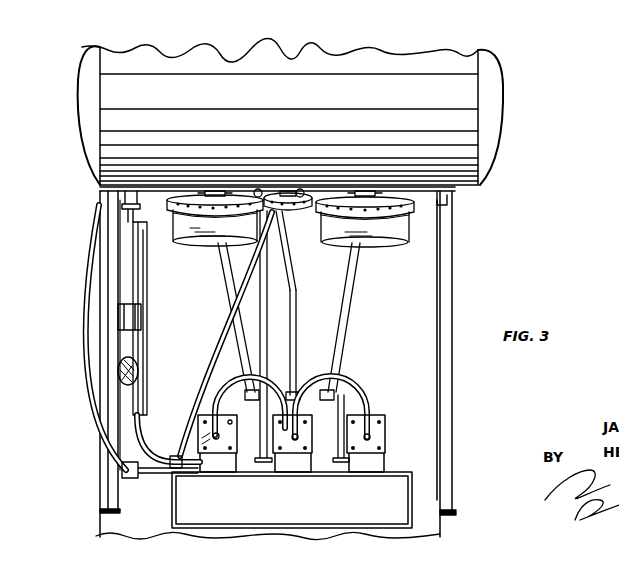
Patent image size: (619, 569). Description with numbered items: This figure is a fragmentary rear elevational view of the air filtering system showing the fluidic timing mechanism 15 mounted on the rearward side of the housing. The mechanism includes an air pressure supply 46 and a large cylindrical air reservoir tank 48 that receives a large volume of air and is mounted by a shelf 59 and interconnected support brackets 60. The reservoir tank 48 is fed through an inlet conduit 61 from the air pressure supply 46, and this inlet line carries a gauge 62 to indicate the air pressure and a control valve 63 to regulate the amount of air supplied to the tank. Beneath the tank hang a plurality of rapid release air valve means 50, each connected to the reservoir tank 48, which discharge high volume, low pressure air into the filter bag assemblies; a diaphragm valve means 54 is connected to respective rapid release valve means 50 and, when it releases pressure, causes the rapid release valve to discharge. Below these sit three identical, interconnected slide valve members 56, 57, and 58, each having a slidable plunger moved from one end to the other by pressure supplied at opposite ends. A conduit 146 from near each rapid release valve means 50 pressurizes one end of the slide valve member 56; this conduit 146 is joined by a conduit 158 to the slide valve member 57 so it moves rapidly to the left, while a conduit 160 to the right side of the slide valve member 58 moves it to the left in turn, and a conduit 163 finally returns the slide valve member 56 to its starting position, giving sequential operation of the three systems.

The fluidic timing mechanism 15 is at (82, 297).
The air pressure supply 46 is at (133, 388).
The air reservoir tank 48 is at (195, 60).
The rapid release air valve means 50 is at (197, 236).
The diaphragm valve means 54 is at (343, 185).
The slide valve member 56 is at (224, 462).
The slide valve member 57 is at (292, 462).
The slide valve member 58 is at (386, 440).
The shelf 59 is at (458, 197).
The support brackets 60 is at (446, 298).
The inlet conduit 61 is at (128, 212).
The gauge 62 is at (139, 378).
The control valve 63 is at (143, 313).
The conduit 146 is at (215, 400).
The conduit 158 is at (297, 372).
The conduit 160 is at (350, 393).
The conduit 163 is at (292, 292).